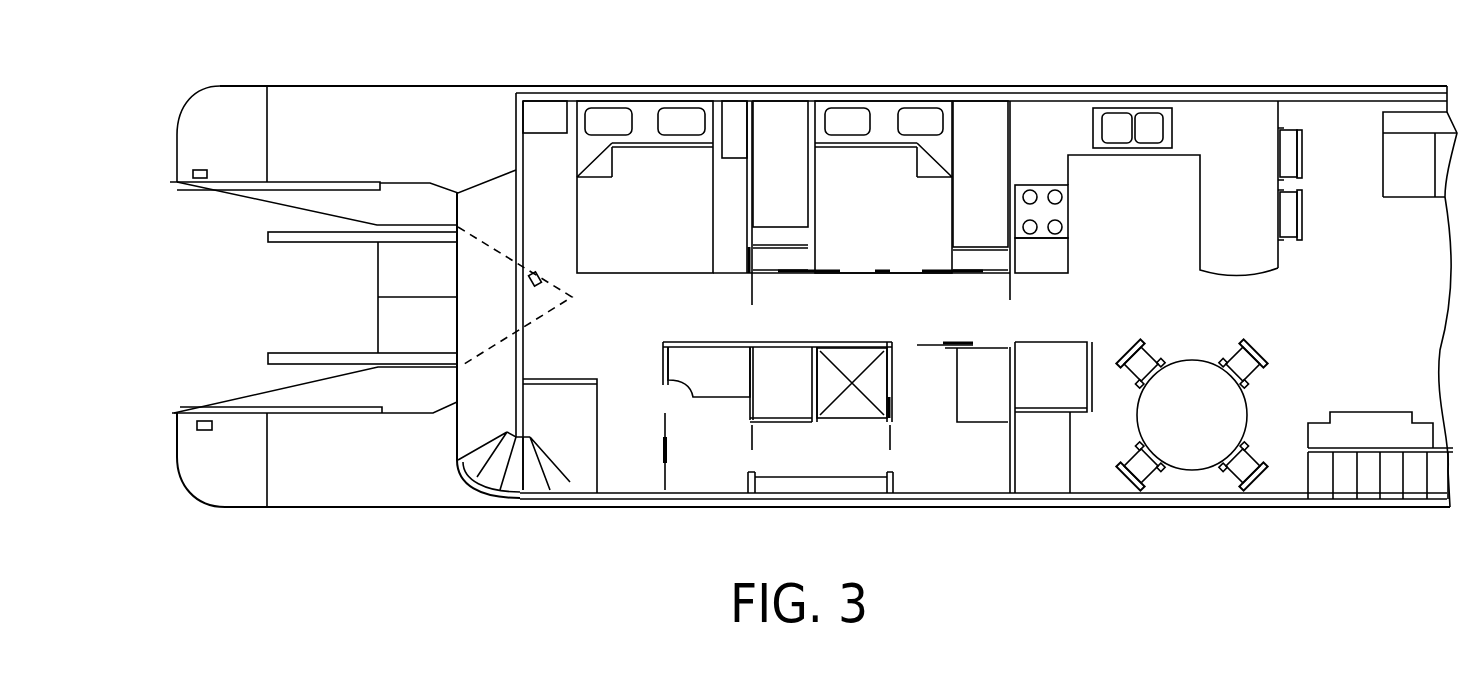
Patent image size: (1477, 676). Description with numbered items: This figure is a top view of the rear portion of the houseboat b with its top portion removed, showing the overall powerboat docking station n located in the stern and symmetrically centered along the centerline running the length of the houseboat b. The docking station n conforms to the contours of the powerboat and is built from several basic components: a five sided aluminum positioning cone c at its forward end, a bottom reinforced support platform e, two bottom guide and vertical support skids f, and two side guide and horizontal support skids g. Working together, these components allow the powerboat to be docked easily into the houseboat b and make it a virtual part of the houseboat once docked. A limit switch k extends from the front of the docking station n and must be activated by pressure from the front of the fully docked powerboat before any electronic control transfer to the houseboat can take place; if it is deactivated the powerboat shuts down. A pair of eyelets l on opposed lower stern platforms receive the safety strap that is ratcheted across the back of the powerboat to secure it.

The houseboat b is at (1010, 508).
The five sided aluminum positioning cone c is at (483, 317).
The bottom reinforced support platform e is at (393, 275).
The bottom guide/vertical support skids f is at (268, 237).
The side guide/horizontal support skids g is at (223, 190).
The limit switch k is at (541, 270).
The eyelets l is at (196, 171).
The houseboat docking station n is at (421, 203).